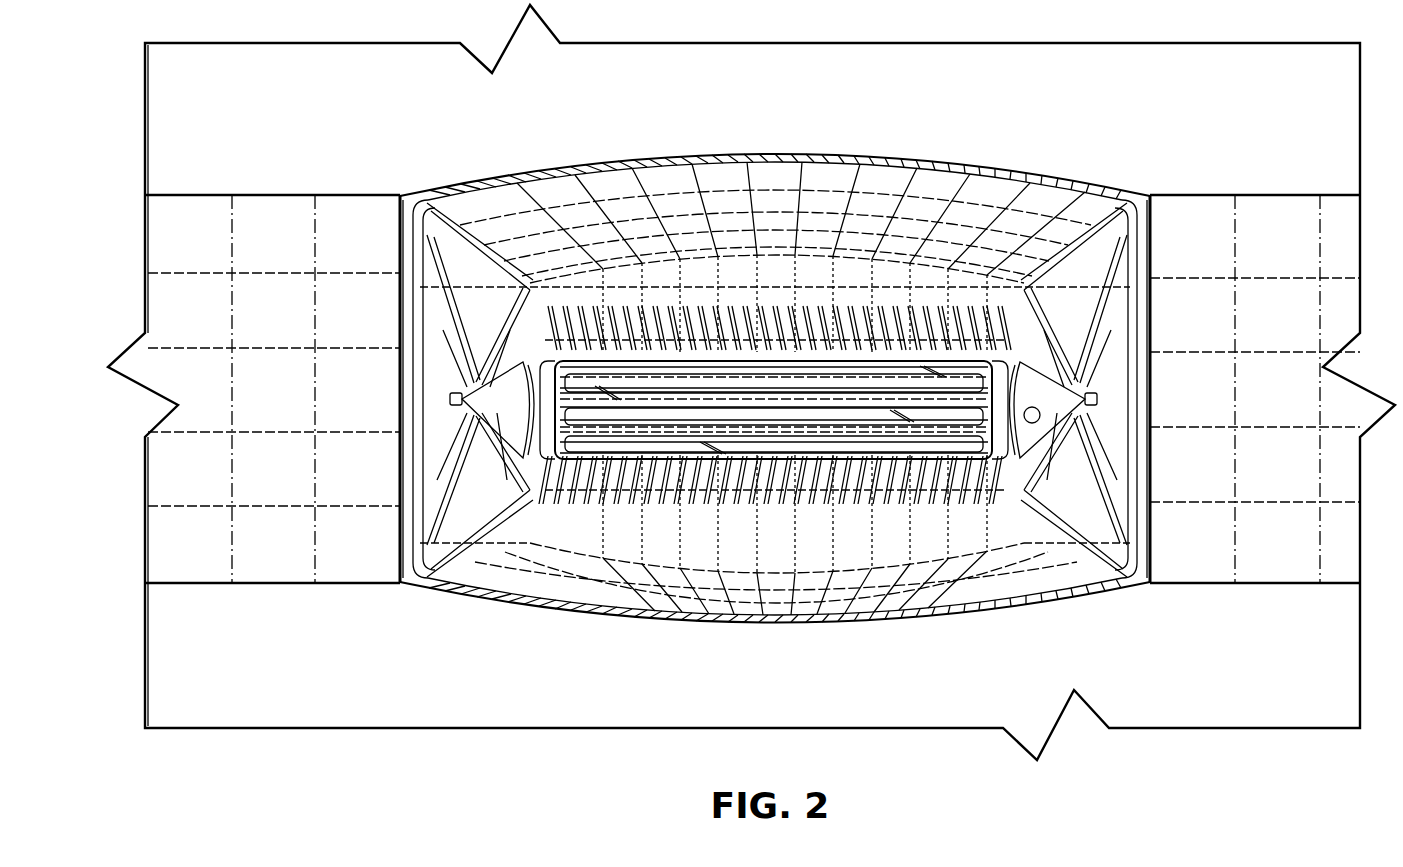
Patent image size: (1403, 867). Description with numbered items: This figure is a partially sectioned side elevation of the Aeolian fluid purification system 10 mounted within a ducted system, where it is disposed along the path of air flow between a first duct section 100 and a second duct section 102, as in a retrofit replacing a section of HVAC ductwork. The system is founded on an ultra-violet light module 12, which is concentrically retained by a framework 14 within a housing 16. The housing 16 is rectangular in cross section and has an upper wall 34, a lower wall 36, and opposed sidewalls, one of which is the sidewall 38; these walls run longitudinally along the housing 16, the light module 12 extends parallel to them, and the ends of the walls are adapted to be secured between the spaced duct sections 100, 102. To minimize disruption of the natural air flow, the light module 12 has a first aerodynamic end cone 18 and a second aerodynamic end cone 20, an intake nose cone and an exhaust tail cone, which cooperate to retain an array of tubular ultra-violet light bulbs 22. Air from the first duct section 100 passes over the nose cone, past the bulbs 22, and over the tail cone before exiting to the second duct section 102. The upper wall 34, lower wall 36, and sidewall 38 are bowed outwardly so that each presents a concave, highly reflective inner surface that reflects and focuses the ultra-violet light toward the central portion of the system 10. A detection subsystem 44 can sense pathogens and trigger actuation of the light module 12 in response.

The Aeolian fluid purification system 10 is at (907, 126).
The ultra-violet light module 12 is at (816, 528).
The framework 14 is at (1143, 200).
The housing 16 is at (700, 160).
The first aerodynamic end cone 18 is at (1060, 300).
The second aerodynamic end cone 20 is at (503, 290).
The tubular ultra-violet light bulbs 22 is at (567, 396).
The upper wall 34 is at (772, 175).
The lower wall 36 is at (607, 603).
The sidewall 38 is at (887, 532).
The detection subsystem 44 is at (1078, 428).
The first duct section 100 is at (1278, 195).
The second duct section 102 is at (272, 195).